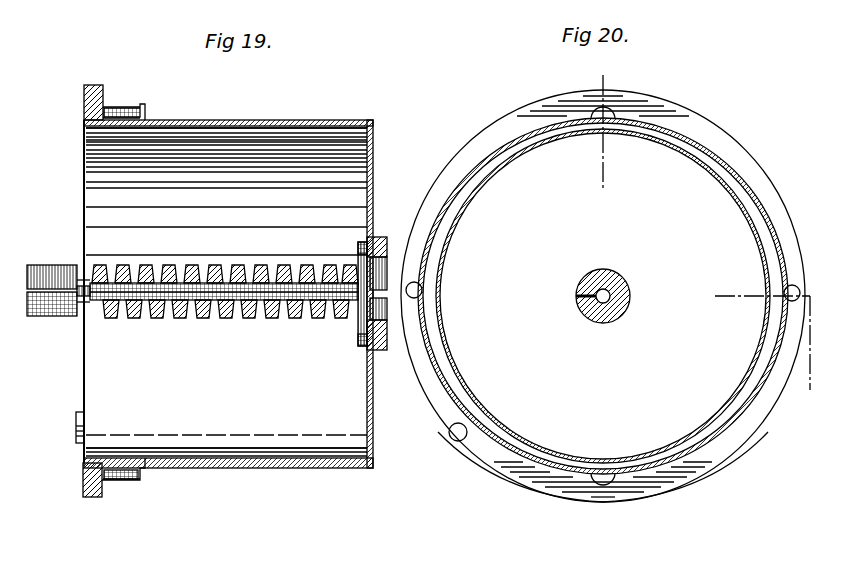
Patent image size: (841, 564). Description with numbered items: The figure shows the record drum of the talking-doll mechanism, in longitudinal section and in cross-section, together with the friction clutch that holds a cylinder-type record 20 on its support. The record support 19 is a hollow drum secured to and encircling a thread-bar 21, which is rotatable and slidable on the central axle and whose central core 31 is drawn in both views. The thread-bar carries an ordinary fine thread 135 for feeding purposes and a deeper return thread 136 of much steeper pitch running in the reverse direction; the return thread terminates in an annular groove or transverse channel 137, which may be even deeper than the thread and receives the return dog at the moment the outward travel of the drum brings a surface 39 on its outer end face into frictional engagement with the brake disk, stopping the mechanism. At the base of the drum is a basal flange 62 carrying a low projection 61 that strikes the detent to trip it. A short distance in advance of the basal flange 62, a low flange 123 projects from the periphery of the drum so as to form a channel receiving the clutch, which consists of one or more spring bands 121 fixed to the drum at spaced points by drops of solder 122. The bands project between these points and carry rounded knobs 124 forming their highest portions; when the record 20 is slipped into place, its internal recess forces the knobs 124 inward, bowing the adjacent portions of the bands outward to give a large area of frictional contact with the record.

In FIG. 19, the record support 19 is at (352, 118).
In FIG. 20, the record support 19 is at (766, 330).
In FIG. 19, the record 20 is at (117, 105).
In FIG. 19, the thread-bar 21 is at (235, 318).
In FIG. 20, the thread-bar 21 is at (610, 323).
In FIG. 19, the shaft core 31 is at (182, 318).
In FIG. 20, the shaft core 31 is at (585, 296).
In FIG. 19, the surface 39 is at (387, 345).
In FIG. 19, the low projection 61 is at (76, 432).
In FIG. 20, the low projection 61 is at (452, 440).
In FIG. 19, the basal flange 62 is at (85, 497).
In FIG. 20, the basal flange 62 is at (712, 466).
In FIG. 19, the spring bands 121 is at (175, 120).
In FIG. 20, the spring bands 121 is at (718, 146).
In FIG. 19, the drops of solder 122 is at (125, 107).
In FIG. 20, the drops of solder 122 is at (610, 112).
In FIG. 19, the flange 123 is at (148, 108).
In FIG. 19, the rounded knobs 124 is at (125, 480).
In FIG. 20, the rounded knobs 124 is at (420, 295).
In FIG. 19, the fine thread 135 is at (45, 316).
In FIG. 19, the return thread 136 is at (126, 318).
In FIG. 20, the return thread 136 is at (606, 270).
In FIG. 19, the annular groove 137 is at (82, 280).